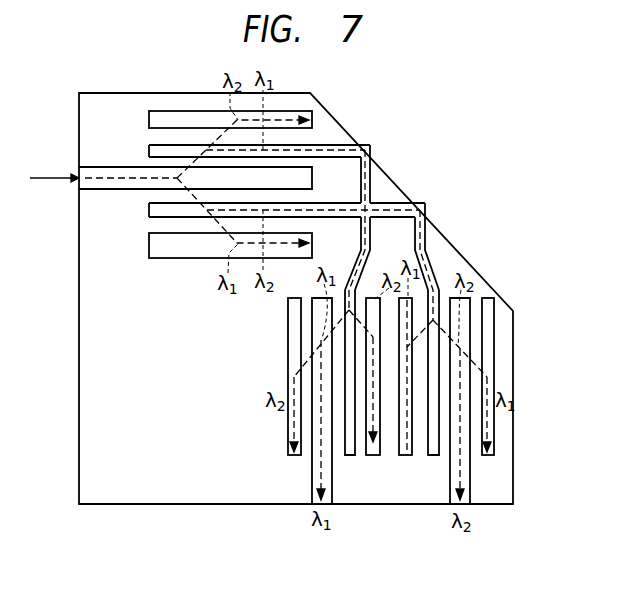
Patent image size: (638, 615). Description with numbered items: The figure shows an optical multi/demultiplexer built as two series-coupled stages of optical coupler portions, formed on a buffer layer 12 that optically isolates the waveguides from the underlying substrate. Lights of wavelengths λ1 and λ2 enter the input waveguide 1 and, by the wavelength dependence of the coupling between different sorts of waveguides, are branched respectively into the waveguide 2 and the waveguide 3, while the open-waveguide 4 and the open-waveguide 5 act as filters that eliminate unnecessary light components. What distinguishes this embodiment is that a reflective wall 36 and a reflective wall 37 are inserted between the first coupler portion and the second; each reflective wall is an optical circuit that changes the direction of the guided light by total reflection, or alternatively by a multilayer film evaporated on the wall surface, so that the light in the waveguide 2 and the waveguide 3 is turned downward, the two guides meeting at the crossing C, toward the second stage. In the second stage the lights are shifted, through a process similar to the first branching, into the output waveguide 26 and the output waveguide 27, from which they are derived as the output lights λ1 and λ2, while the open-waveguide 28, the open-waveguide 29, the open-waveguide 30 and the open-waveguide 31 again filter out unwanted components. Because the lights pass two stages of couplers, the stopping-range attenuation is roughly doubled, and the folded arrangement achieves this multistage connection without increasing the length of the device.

The waveguide 1 is at (93, 169).
The waveguide 2 is at (317, 146).
The waveguide 3 is at (315, 207).
The open-waveguide 4 is at (189, 112).
The open-waveguide 5 is at (189, 257).
The buffer layer 12 is at (168, 503).
The waveguide 26 is at (310, 505).
The waveguide 27 is at (450, 505).
The open-waveguide 28 is at (489, 356).
The open-waveguide 29 is at (413, 294).
The open-waveguide 30 is at (372, 298).
The open-waveguide 31 is at (291, 334).
The reflective wall 36 is at (362, 147).
The reflective wall 37 is at (418, 208).
The waveguide crossing C is at (372, 204).